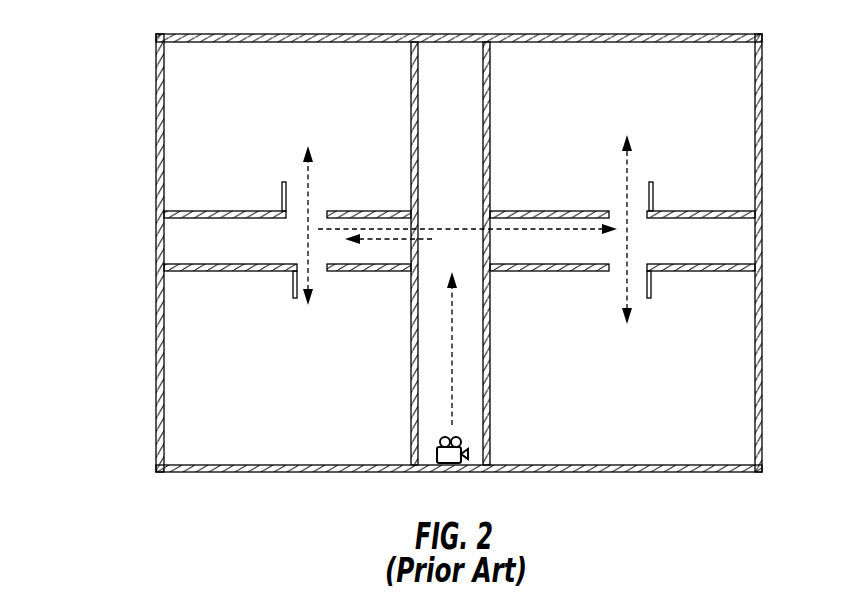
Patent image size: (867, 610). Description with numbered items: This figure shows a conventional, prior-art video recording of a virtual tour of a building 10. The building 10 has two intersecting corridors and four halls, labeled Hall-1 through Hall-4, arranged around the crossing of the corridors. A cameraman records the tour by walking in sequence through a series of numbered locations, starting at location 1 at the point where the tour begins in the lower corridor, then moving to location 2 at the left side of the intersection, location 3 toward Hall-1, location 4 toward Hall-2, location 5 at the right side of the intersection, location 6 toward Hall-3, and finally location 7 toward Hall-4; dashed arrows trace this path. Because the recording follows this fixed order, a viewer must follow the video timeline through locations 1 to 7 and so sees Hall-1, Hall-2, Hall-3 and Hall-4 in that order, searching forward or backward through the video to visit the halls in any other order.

The building 10 is at (127, 68).
The location 1 is at (404, 329).
The location 2 is at (466, 243).
The location 3 is at (326, 306).
The location 4 is at (326, 211).
The location 5 is at (605, 249).
The location 6 is at (611, 330).
The location 7 is at (643, 216).